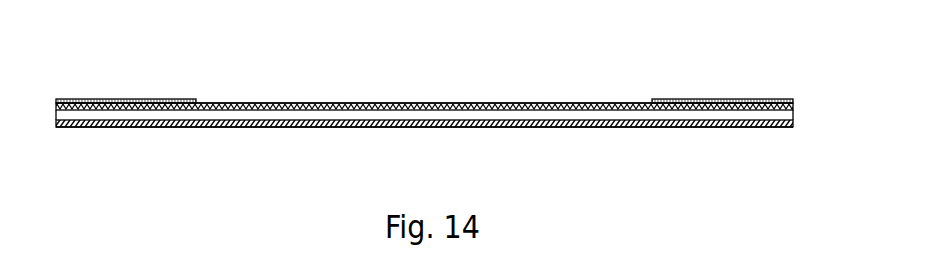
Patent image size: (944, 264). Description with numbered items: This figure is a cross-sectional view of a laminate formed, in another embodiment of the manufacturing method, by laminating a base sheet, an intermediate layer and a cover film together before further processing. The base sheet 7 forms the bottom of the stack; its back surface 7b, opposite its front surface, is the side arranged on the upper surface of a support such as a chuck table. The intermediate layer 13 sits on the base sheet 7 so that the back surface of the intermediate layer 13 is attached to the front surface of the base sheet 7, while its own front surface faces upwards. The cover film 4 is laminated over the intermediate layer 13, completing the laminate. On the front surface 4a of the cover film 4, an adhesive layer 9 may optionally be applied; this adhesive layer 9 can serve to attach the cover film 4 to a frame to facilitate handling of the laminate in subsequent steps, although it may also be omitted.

The cover film 4 is at (597, 102).
The front surface of the cover film 4a is at (493, 103).
The base sheet 7 is at (713, 133).
The back surface of the base sheet 7b is at (165, 127).
The adhesive layer 9 is at (722, 92).
The intermediate layer 13 is at (773, 116).